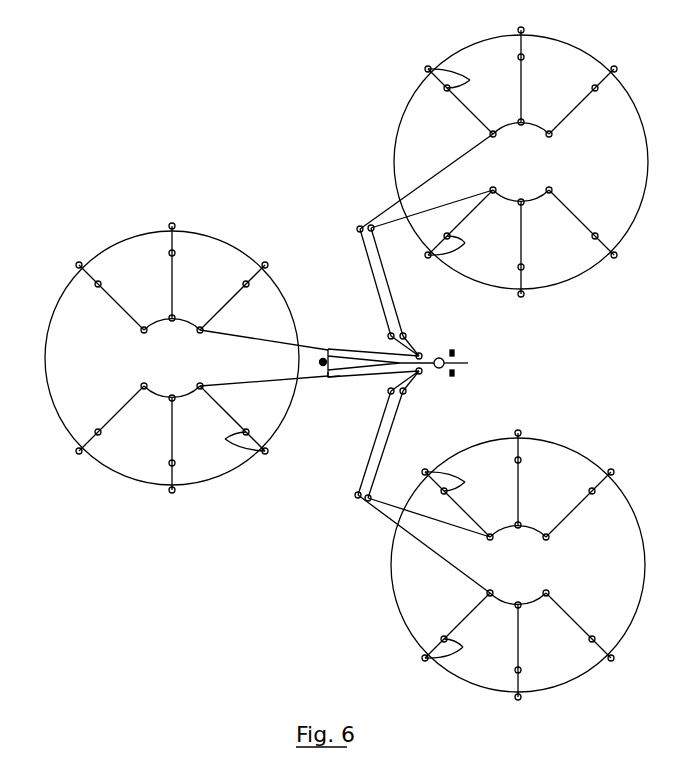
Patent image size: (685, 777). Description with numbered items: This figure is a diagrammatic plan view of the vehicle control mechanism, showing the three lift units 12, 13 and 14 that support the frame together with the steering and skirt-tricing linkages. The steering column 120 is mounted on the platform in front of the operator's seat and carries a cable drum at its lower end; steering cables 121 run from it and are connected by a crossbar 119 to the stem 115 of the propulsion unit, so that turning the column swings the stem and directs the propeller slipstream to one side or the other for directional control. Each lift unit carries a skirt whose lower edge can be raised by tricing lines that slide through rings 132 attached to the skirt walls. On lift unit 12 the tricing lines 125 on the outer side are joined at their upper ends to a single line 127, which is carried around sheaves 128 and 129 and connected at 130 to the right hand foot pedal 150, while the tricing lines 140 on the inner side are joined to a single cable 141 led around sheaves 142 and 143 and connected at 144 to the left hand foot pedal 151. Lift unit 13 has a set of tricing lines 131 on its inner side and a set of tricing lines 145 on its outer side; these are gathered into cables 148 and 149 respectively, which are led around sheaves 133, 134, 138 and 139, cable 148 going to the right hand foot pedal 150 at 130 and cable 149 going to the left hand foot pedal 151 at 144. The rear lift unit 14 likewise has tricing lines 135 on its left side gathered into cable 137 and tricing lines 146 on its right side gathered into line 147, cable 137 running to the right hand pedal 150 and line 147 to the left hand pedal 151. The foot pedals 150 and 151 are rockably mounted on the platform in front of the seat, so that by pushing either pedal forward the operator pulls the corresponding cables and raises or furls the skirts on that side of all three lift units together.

The lift unit 12 is at (640, 112).
The lift unit 13 is at (593, 667).
The rear lift unit 14 is at (93, 260).
The stem 115 is at (321, 360).
The crossbar 119 is at (326, 379).
The steering column 120 is at (450, 365).
The steering cables 121 is at (381, 356).
The tricing lines 125 is at (519, 40).
The single line 127 is at (457, 157).
The sheave 128 is at (357, 227).
The sheave 129 is at (389, 334).
The connection to right hand foot pedal 130 is at (421, 374).
The tricing lines 131 is at (515, 447).
The rings 132 is at (171, 252).
The sheave 133 is at (355, 495).
The sheave 134 is at (370, 496).
The tricing lines 135 is at (178, 240).
The cable 137 is at (227, 336).
The sheave 138 is at (389, 392).
The sheave 139 is at (404, 394).
The tricing lines 140 is at (518, 278).
The cable 141 is at (425, 210).
The sheave 142 is at (373, 233).
The sheave 143 is at (404, 334).
The connection to left hand foot pedal 144 is at (421, 354).
The tricing lines 145 is at (515, 683).
The tricing lines 146 is at (173, 477).
The single line 147 is at (228, 388).
The cable 148 is at (430, 520).
The cable 149 is at (465, 582).
The right hand foot pedal 150 is at (454, 374).
The left hand foot pedal 151 is at (454, 352).